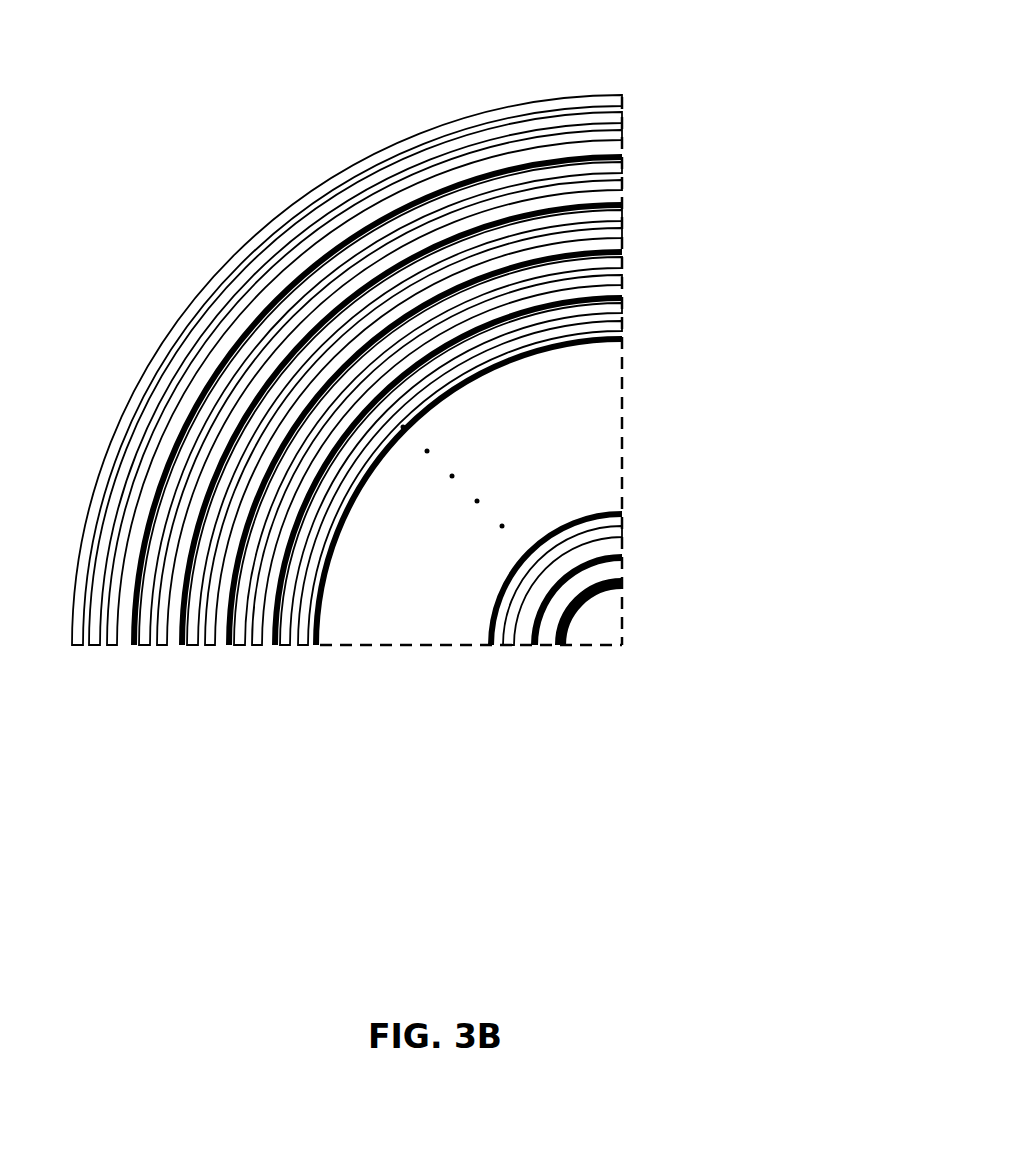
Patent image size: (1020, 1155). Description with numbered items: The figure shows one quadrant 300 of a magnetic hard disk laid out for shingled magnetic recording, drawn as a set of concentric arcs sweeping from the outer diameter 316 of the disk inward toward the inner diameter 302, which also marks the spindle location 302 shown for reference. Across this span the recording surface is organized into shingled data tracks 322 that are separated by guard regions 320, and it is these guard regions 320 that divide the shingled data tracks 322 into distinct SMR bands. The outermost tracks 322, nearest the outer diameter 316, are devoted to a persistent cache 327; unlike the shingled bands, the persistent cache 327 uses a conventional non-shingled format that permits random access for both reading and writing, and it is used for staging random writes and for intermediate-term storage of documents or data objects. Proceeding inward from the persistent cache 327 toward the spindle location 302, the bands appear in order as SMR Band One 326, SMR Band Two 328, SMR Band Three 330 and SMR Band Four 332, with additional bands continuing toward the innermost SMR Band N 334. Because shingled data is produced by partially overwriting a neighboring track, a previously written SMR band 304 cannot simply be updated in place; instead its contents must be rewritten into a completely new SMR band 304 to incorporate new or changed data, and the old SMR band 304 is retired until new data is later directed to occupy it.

The display structure 300 is at (290, 50).
The inner diameter / spindle location 302 is at (585, 598).
The SMR band 304 is at (364, 525).
The outer diameter 316 is at (284, 210).
The guard regions 320 is at (660, 278).
The shingled data tracks 322 is at (660, 215).
The SMR Band-1 326 is at (176, 648).
The persistent cache 327 is at (70, 648).
The SMR Band-2 328 is at (177, 648).
The SMR Band-3 330 is at (222, 648).
The SMR Band-4 332 is at (263, 648).
The SMR Band-N 334 is at (487, 648).